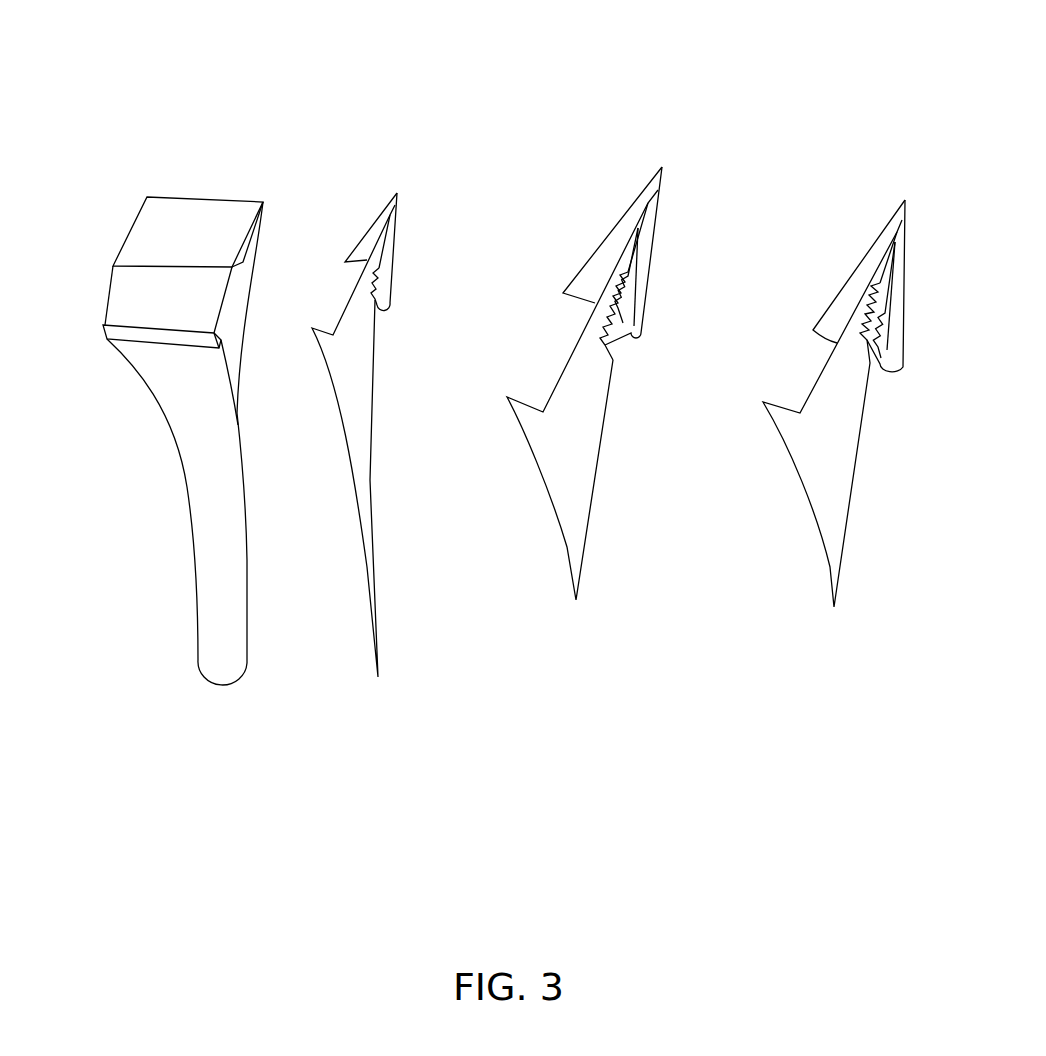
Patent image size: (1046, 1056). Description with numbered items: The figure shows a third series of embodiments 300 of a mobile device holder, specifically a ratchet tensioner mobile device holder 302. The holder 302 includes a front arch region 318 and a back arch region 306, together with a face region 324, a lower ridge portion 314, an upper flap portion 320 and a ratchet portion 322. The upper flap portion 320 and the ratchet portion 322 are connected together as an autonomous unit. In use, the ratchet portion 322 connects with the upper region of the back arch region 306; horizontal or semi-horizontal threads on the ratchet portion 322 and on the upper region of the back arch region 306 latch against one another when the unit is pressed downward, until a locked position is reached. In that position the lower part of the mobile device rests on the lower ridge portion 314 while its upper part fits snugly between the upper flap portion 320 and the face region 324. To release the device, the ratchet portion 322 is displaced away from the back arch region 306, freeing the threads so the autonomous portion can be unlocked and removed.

The third series of embodiments 300 is at (503, 359).
The mobile device holder 302 is at (267, 450).
The back arch region 306 is at (639, 405).
The lower ridge portion 314 is at (132, 332).
The front arch region 318 is at (196, 367).
The upper flap portion 320 is at (203, 250).
The ratchet portion 322 is at (667, 269).
The face region 324 is at (187, 315).